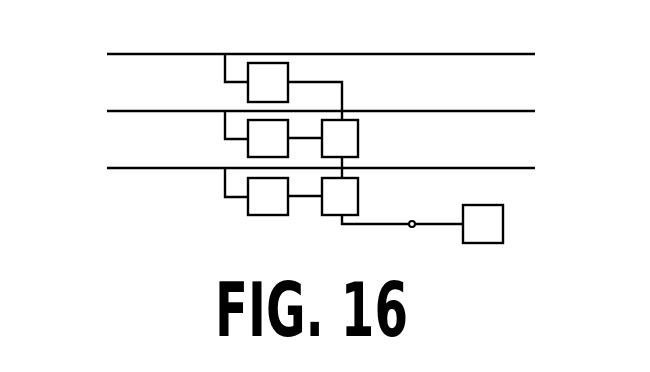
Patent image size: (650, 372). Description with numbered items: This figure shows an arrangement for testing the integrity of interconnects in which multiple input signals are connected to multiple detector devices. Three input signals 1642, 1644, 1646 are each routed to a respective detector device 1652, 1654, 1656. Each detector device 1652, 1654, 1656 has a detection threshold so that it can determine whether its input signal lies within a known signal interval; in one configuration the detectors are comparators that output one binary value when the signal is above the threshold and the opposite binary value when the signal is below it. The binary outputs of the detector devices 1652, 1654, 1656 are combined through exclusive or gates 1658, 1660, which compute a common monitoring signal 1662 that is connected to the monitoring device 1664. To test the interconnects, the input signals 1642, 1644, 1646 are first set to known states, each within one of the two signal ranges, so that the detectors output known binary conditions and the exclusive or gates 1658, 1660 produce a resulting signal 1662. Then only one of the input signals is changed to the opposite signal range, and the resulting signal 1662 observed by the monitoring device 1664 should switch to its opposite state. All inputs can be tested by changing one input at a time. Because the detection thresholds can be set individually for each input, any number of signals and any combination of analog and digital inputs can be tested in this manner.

The input signal 1642 is at (93, 54).
The input signal 1644 is at (93, 111).
The input signal 1646 is at (93, 168).
The detector device 1652 is at (248, 88).
The detector device 1654 is at (248, 145).
The detector device 1656 is at (248, 203).
The exclusive or (XOR) gate 1658 is at (358, 135).
The exclusive or (XOR) gate 1660 is at (358, 193).
The common monitoring signal 1662 is at (412, 228).
The monitoring device 1664 is at (503, 221).